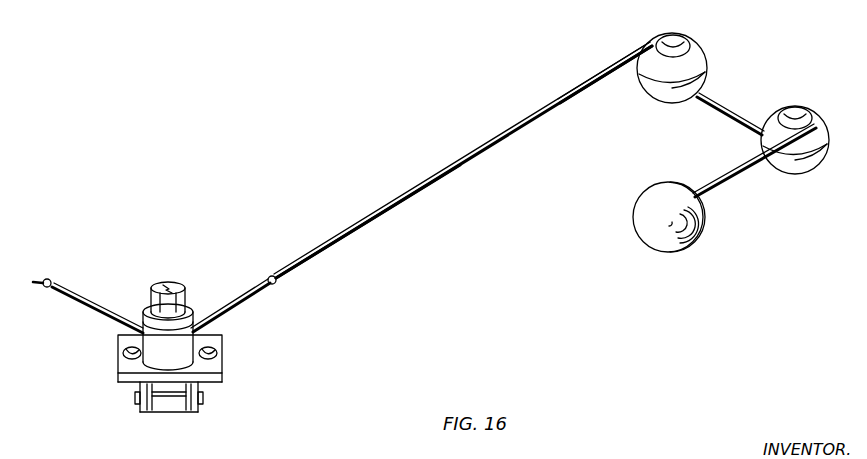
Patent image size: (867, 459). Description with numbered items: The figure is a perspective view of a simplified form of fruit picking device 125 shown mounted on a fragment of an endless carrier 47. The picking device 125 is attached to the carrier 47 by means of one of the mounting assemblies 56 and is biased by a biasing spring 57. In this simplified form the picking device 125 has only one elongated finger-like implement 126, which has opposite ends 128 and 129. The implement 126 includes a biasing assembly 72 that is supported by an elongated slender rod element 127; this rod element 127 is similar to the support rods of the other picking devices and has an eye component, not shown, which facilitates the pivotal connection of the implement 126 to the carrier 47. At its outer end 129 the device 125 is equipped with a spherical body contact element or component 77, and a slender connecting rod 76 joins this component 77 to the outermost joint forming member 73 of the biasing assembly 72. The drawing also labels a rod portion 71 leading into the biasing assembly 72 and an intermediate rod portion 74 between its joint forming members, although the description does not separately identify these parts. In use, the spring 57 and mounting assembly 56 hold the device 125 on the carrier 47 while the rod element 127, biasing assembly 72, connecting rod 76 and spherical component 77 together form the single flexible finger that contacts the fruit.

The endless carrier 47 is at (178, 411).
The mounting assembly 56 is at (146, 299).
The biasing spring 57 is at (240, 314).
The rod 71 is at (632, 58).
The biasing assembly 72 is at (713, 108).
The outermost joint forming member 73 is at (705, 48).
The rod 74 is at (735, 118).
The connecting rod 76 is at (748, 168).
The spherical body contact element 77 is at (650, 247).
The fruit picking device 125 is at (481, 158).
The elongated finger-like implement 126 is at (500, 141).
The elongated slender rod element 127 is at (364, 224).
The end of implement 128 is at (235, 297).
The outer end of implement 129 is at (706, 200).